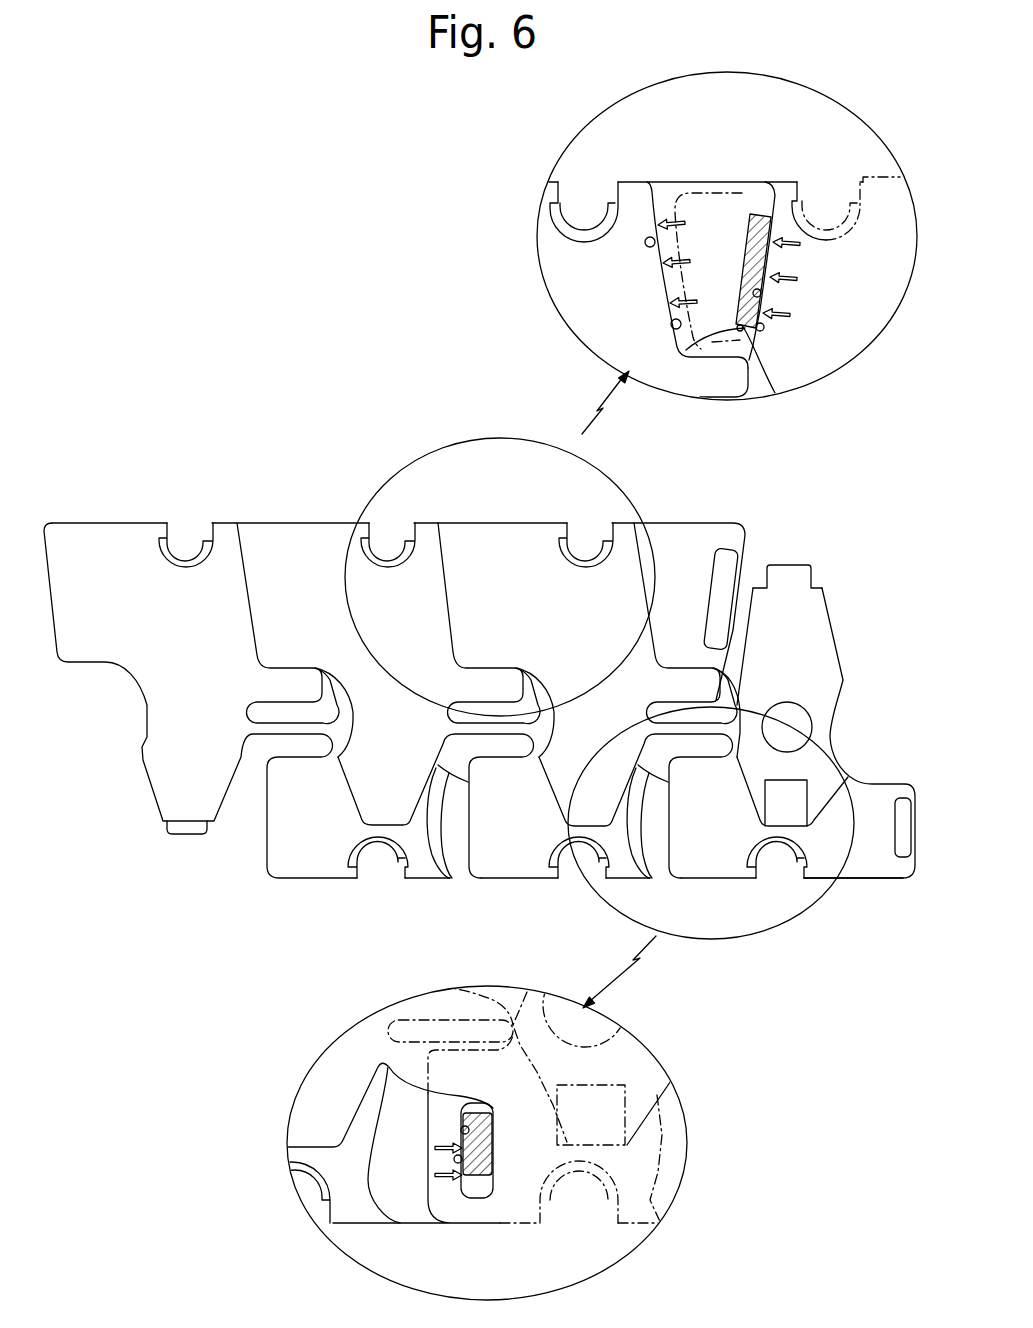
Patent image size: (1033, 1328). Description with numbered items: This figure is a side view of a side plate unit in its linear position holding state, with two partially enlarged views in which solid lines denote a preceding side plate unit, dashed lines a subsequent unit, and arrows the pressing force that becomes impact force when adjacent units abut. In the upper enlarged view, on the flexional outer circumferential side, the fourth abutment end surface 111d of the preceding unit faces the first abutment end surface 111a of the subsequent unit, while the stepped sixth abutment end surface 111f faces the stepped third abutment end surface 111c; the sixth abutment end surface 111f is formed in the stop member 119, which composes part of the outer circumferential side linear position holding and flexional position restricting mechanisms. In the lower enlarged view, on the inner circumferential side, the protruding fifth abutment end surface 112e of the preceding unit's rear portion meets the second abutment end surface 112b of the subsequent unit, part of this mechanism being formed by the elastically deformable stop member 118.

The stop member 119 is at (760, 213).
The first abutment end surface 111a is at (677, 237).
The third abutment end surface 111c is at (757, 292).
The fourth abutment end surface 111d is at (671, 324).
The sixth abutment end surface 111f is at (684, 357).
The fifth abutment end surface 112e is at (462, 1128).
The elastically deformable stop member 118 is at (476, 1178).
The second abutment end surface 112b is at (480, 1173).